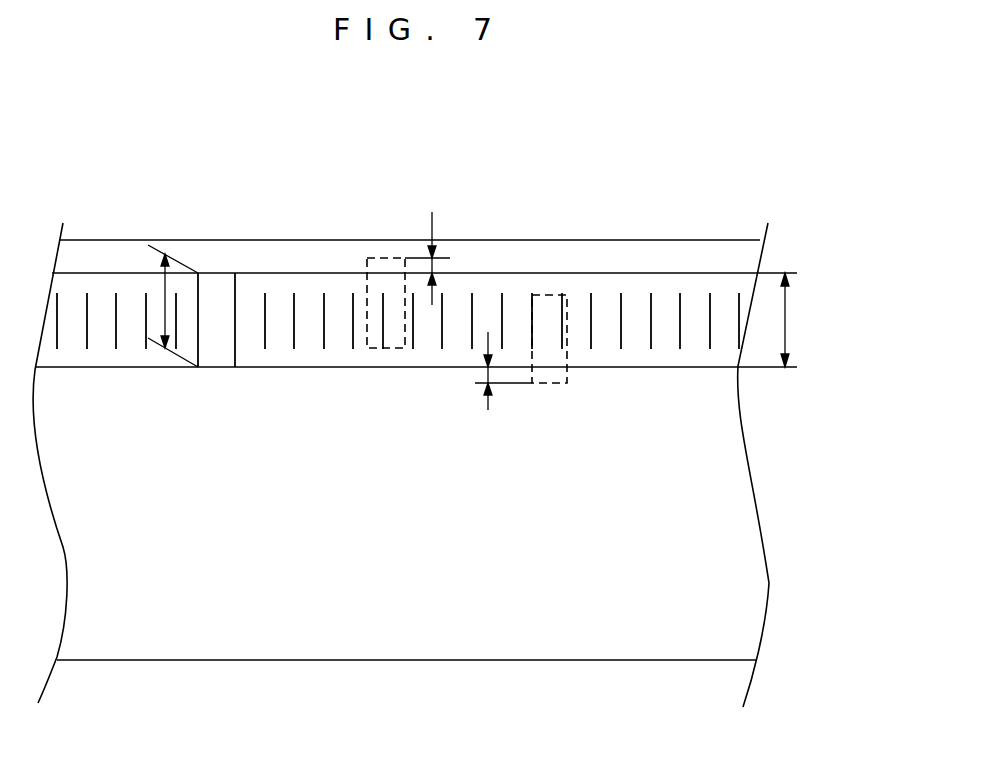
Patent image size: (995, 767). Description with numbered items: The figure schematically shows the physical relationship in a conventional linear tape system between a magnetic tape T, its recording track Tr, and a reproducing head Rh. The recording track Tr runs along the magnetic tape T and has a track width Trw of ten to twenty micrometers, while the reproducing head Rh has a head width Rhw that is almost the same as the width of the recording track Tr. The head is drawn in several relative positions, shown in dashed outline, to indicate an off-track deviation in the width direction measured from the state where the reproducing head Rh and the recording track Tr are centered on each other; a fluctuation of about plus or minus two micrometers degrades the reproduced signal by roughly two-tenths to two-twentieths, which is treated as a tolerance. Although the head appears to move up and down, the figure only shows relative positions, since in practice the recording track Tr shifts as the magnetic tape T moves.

The magnetic tape T is at (690, 242).
The recording track Tr is at (98, 273).
The reproducing head Rh is at (216, 293).
The head width Rhw is at (165, 305).
The track width Trw is at (785, 323).